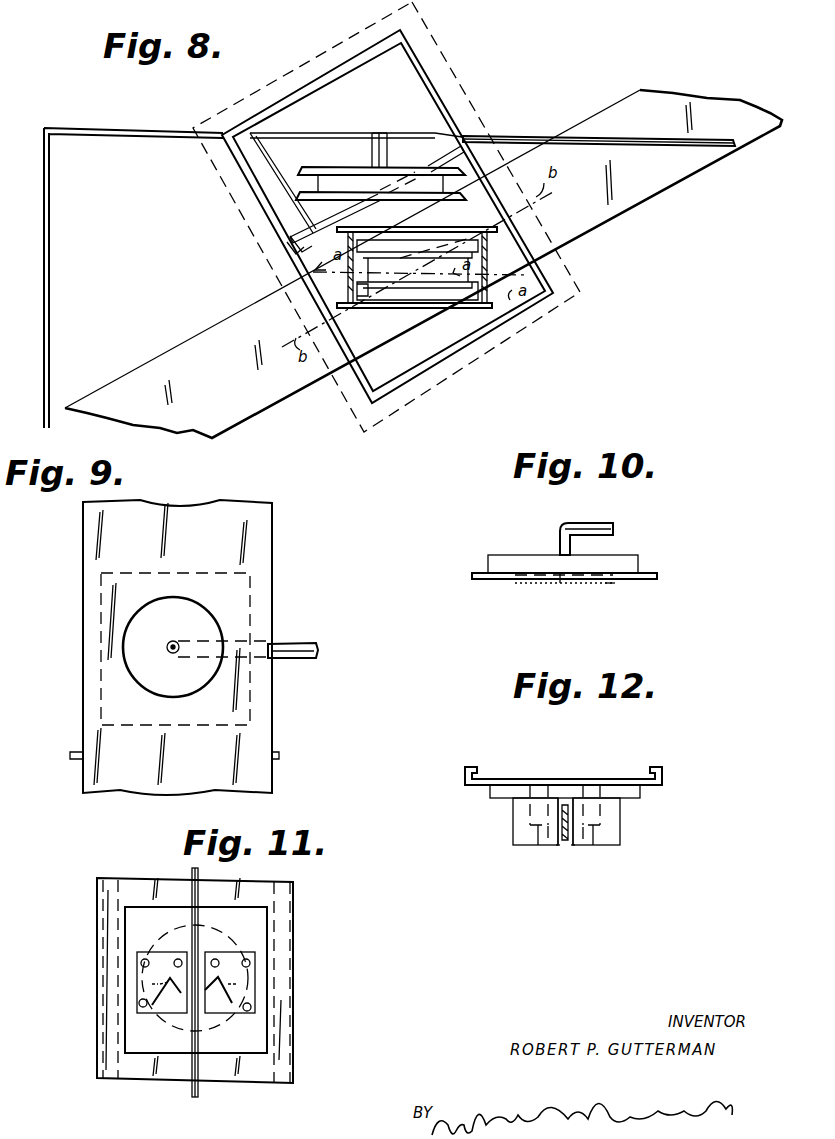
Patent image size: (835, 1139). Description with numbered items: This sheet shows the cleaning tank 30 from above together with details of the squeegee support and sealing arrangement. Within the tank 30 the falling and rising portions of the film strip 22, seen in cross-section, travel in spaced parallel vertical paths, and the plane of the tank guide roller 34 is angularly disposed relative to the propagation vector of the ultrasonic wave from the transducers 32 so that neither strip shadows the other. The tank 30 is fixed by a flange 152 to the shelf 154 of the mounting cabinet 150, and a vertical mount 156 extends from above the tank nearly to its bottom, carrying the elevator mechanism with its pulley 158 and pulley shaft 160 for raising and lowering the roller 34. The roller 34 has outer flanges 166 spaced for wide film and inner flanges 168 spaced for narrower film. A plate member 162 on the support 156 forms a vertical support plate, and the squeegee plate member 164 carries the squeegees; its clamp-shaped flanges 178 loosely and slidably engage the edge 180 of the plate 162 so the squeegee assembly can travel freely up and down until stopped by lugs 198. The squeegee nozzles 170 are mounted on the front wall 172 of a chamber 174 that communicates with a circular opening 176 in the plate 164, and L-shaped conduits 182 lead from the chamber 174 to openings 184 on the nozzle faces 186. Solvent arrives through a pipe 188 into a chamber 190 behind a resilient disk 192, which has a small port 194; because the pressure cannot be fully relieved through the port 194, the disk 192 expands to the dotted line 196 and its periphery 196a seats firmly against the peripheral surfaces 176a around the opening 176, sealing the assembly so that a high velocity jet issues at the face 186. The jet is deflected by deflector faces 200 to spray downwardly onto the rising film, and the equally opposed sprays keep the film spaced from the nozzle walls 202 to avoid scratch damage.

In FIG. 8, the falling portion of the film strip 22 is at (491, 270).
In FIG. 12, the falling portion of the film strip 22 is at (565, 842).
In FIG. 8, the tank 30 is at (418, 389).
In FIG. 8, the transducers 32 is at (606, 192).
In FIG. 8, the tank guide roller 34 is at (408, 318).
In FIG. 8, the mounting cabinet 150 is at (124, 128).
In FIG. 8, the flange 152 is at (282, 80).
In FIG. 8, the shelf 154 is at (156, 258).
In FIG. 8, the vertical mount 156 is at (286, 172).
In FIG. 8, the pulley 158 is at (334, 180).
In FIG. 8, the pulley shaft 160 is at (390, 153).
In FIG. 8, the plate member 162 is at (345, 214).
In FIG. 9, the plate member 162 is at (238, 550).
In FIG. 10, the plate member 162 is at (646, 588).
In FIG. 8, the squeegee plate member 164 is at (358, 210).
In FIG. 12, the squeegee plate member 164 is at (469, 784).
In FIG. 8, the flange 166 is at (358, 292).
In FIG. 8, the flange 168 is at (376, 290).
In FIG. 12, the squeegee nozzle 170 is at (506, 832).
In FIG. 11, the squeegee nozzle 170 is at (164, 952).
In FIG. 12, the front wall 172 is at (500, 798).
In FIG. 11, the front wall 172 is at (272, 936).
In FIG. 12, the chamber 174 is at (567, 814).
In FIG. 12, the circular opening 176 is at (575, 772).
In FIG. 12, the peripheral surfaces 176a is at (516, 778).
In FIG. 12, the clamp-shaped flanges 178 is at (466, 766).
In FIG. 10, the edge 180 is at (474, 573).
In FIG. 12, the L-shaped conduit 182 is at (538, 838).
In FIG. 12, the opening 184 is at (540, 848).
In FIG. 11, the face 186 is at (162, 1010).
In FIG. 9, the pipe 188 is at (296, 644).
In FIG. 10, the pipe 188 is at (558, 544).
In FIG. 10, the chamber 190 is at (563, 564).
In FIG. 9, the resilient disk 192 is at (210, 690).
In FIG. 10, the resilient disk 192 is at (538, 584).
In FIG. 9, the port 194 is at (172, 650).
In FIG. 10, the port 194 is at (562, 584).
In FIG. 10, the dotted line 196 is at (518, 582).
In FIG. 10, the periphery 196a is at (614, 583).
In FIG. 9, the lug 198 is at (68, 755).
In FIG. 11, the deflector face 200 is at (173, 994).
In FIG. 12, the wall 202 is at (560, 848).
In FIG. 11, the wall 202 is at (157, 974).